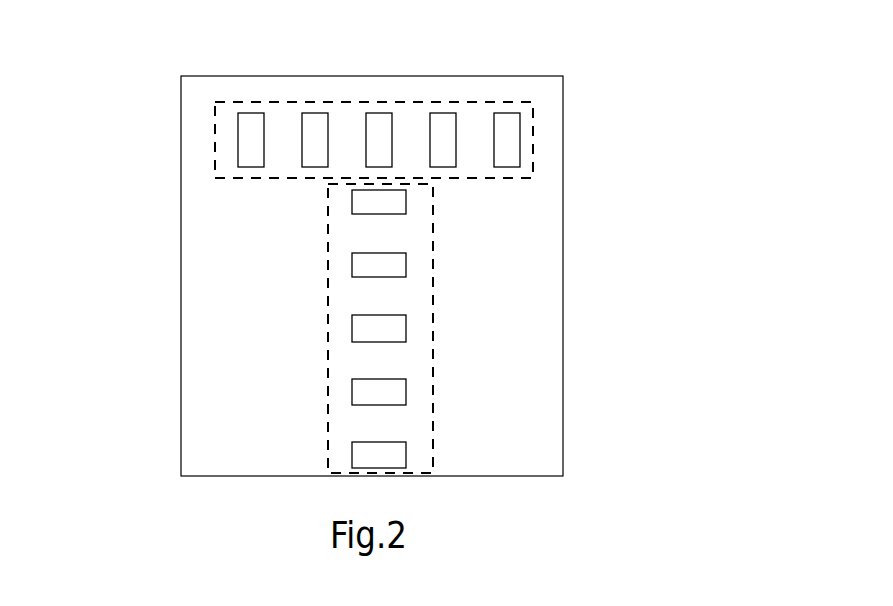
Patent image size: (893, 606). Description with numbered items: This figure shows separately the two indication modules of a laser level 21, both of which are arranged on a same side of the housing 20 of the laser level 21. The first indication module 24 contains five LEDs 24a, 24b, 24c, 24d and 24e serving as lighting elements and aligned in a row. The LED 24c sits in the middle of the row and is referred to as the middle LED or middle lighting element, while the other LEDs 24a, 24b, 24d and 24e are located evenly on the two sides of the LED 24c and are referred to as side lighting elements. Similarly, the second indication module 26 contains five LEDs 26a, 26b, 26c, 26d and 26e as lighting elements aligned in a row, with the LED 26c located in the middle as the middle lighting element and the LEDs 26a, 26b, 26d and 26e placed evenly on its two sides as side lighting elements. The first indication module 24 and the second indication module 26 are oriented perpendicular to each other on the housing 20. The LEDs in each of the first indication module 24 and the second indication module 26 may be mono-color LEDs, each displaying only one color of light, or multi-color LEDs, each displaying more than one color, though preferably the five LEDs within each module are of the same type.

The housing 20 is at (563, 198).
The laser level 21 is at (662, 405).
The first indication module 24 is at (533, 128).
The LED 24a is at (247, 112).
The LED 24b is at (310, 112).
The LED 24c is at (383, 112).
The LED 24d is at (447, 112).
The LED 24e is at (510, 112).
The second indication module 26 is at (433, 412).
The LED 26a is at (352, 200).
The LED 26b is at (352, 277).
The LED 26c is at (352, 341).
The LED 26d is at (352, 391).
The LED 26e is at (352, 460).